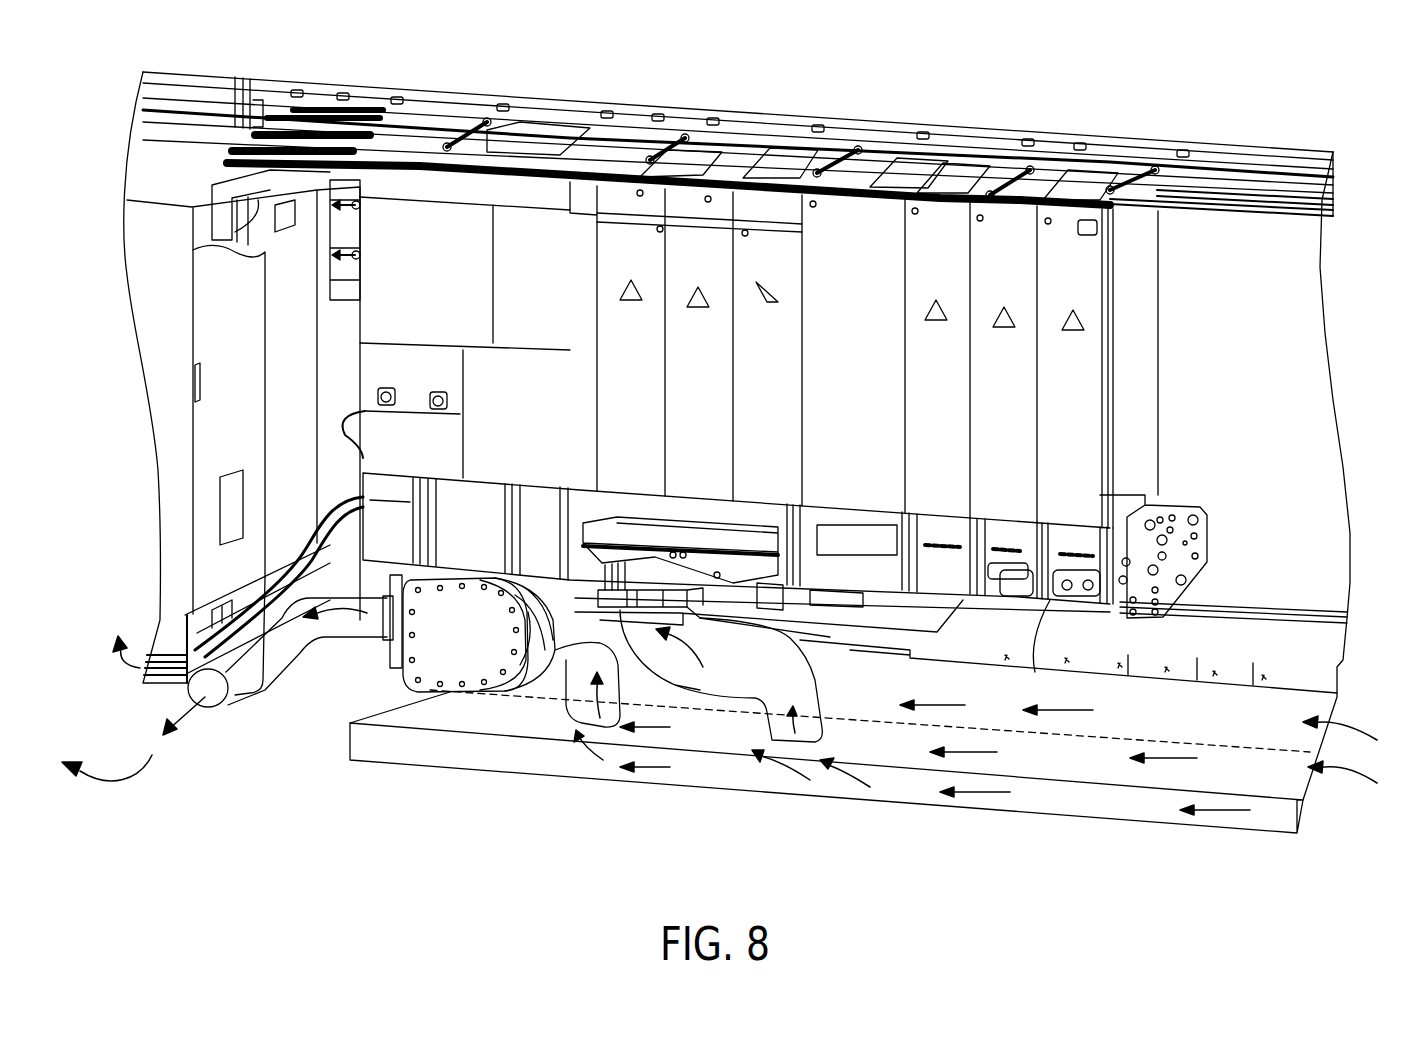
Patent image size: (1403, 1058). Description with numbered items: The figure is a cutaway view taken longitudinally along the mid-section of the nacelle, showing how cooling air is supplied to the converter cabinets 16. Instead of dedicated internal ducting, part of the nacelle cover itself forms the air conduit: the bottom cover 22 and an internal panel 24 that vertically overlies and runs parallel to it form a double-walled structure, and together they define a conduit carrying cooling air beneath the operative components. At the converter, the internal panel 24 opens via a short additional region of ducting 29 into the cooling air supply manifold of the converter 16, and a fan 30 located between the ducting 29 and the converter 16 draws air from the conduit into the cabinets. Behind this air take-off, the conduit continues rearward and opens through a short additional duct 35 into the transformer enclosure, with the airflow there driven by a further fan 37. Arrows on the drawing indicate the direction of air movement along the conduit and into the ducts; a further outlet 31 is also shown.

The converter cabinets 16 is at (762, 250).
The bottom cover 22 is at (998, 813).
The internal panel 24 is at (1063, 763).
The ducting 29 is at (693, 677).
The fan 30 is at (663, 573).
The outlet duct 31 is at (573, 667).
The duct 35 is at (295, 637).
The fan 37 is at (443, 648).